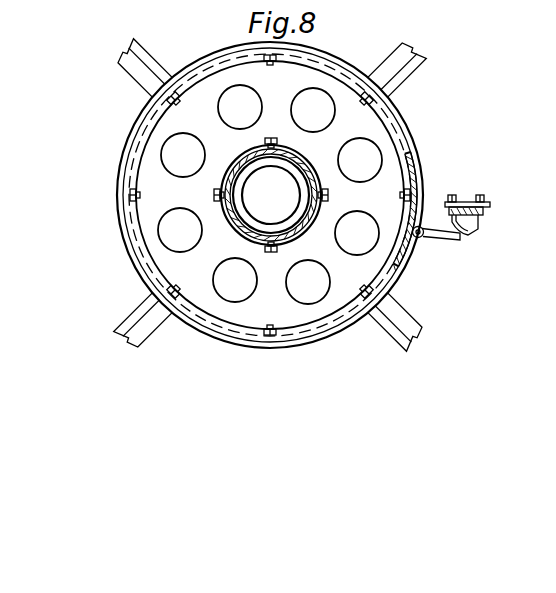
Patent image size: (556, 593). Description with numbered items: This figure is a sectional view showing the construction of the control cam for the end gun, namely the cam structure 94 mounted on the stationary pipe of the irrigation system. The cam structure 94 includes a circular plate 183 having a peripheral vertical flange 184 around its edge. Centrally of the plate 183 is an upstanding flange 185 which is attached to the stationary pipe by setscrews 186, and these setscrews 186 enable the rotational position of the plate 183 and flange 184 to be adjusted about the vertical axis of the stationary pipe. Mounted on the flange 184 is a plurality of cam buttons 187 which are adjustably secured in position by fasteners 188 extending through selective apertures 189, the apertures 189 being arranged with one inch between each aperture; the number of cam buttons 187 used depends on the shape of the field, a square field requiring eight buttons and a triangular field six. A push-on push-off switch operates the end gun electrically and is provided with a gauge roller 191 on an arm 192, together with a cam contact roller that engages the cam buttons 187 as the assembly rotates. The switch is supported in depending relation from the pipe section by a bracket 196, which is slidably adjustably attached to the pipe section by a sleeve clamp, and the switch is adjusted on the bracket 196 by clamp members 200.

The cam structure 94 is at (113, 231).
The circular plate 183 is at (398, 153).
The peripheral vertical flange 184 is at (402, 273).
The upstanding flange 185 is at (313, 162).
The setscrews 186 is at (335, 198).
The cam buttons 187 is at (452, 201).
The fasteners 188 is at (174, 285).
The apertures 189 is at (414, 193).
The gauge roller 191 is at (422, 244).
The arm 192 is at (443, 242).
The bracket 196 is at (477, 195).
The clamp members 200 is at (485, 216).